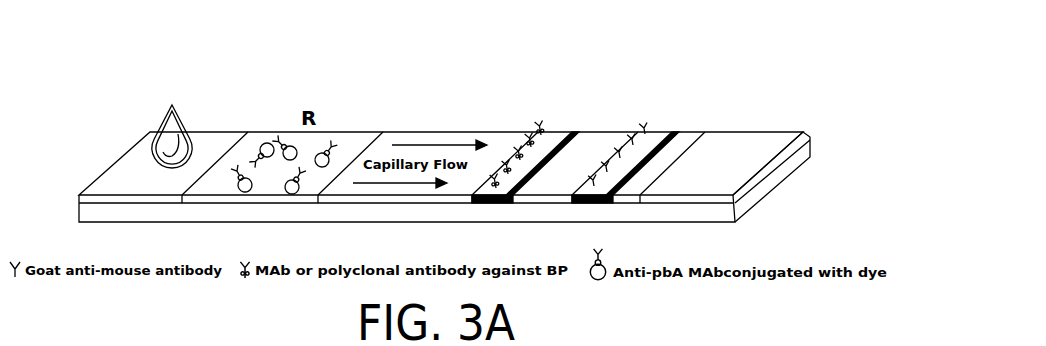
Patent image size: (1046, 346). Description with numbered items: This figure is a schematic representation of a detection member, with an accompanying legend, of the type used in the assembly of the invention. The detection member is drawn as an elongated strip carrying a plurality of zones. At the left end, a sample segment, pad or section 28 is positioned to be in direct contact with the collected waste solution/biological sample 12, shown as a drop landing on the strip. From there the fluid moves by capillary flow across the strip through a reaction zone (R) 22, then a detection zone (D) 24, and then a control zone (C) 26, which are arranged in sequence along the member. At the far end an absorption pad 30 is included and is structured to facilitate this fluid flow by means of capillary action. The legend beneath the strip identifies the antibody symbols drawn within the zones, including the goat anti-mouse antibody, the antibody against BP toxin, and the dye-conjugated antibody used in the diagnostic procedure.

The waste solution/biological sample 12 is at (168, 143).
The reaction zone 22 is at (350, 120).
The detection zone 24 is at (568, 130).
The control zone 26 is at (665, 130).
The sample segment 28 is at (212, 134).
The absorption pad 30 is at (750, 133).